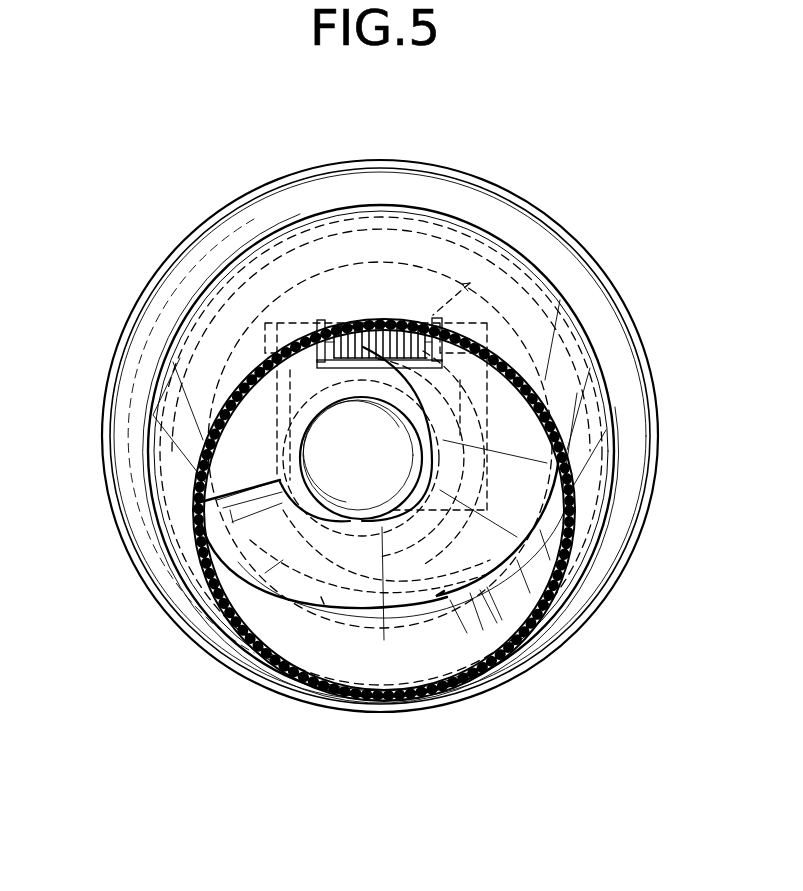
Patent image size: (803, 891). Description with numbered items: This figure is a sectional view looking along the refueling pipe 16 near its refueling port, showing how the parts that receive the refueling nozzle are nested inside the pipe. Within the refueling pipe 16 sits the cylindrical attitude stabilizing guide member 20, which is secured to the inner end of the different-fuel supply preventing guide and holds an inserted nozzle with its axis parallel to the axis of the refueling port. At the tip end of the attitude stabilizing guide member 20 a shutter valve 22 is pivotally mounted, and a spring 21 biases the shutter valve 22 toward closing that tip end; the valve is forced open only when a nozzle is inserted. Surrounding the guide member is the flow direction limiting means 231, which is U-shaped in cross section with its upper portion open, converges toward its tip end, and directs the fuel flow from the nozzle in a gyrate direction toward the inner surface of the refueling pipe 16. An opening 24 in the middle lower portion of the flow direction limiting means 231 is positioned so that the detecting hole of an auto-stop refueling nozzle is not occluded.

The refueling pipe 16 is at (175, 486).
The attitude stabilizing guide member 20 is at (432, 400).
The spring 21 is at (343, 327).
The shutter valve 22 is at (293, 392).
The flow direction limiting means 231 is at (390, 540).
The opening 24 is at (417, 605).